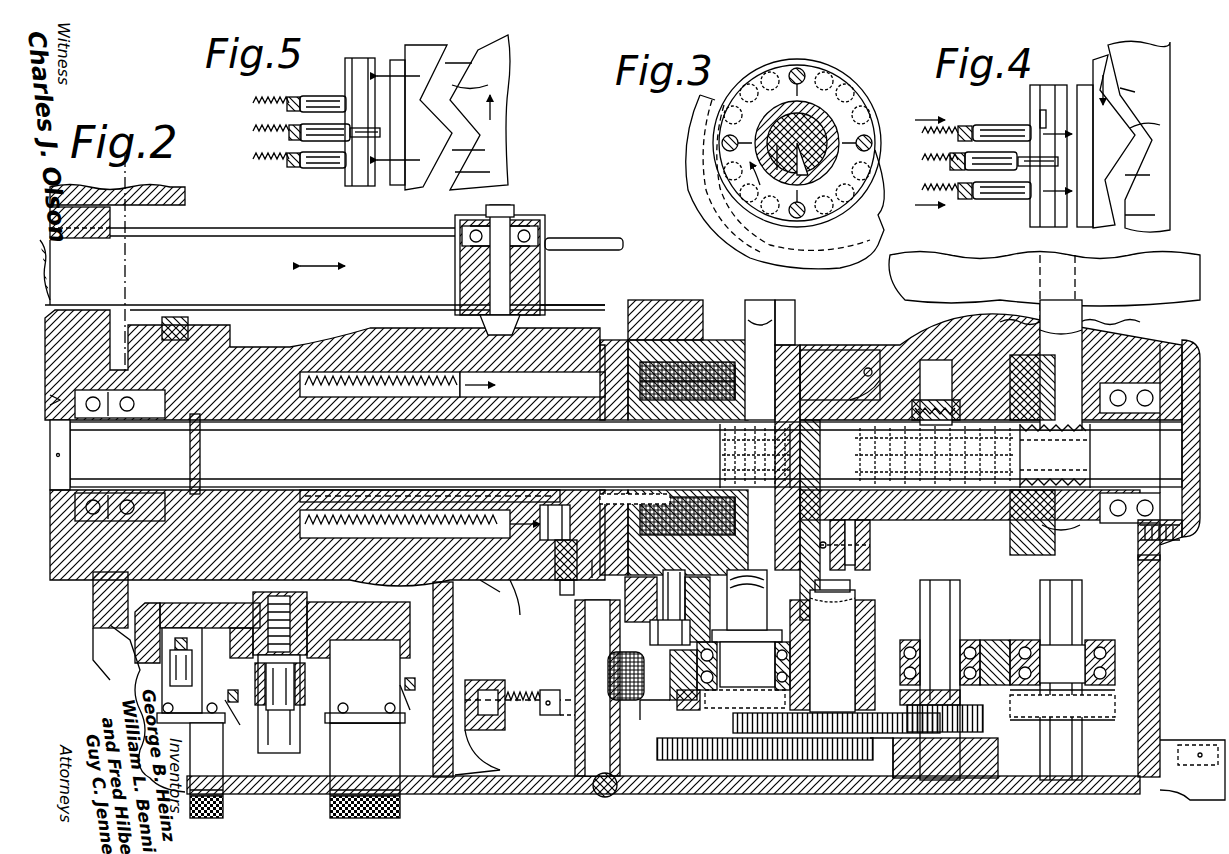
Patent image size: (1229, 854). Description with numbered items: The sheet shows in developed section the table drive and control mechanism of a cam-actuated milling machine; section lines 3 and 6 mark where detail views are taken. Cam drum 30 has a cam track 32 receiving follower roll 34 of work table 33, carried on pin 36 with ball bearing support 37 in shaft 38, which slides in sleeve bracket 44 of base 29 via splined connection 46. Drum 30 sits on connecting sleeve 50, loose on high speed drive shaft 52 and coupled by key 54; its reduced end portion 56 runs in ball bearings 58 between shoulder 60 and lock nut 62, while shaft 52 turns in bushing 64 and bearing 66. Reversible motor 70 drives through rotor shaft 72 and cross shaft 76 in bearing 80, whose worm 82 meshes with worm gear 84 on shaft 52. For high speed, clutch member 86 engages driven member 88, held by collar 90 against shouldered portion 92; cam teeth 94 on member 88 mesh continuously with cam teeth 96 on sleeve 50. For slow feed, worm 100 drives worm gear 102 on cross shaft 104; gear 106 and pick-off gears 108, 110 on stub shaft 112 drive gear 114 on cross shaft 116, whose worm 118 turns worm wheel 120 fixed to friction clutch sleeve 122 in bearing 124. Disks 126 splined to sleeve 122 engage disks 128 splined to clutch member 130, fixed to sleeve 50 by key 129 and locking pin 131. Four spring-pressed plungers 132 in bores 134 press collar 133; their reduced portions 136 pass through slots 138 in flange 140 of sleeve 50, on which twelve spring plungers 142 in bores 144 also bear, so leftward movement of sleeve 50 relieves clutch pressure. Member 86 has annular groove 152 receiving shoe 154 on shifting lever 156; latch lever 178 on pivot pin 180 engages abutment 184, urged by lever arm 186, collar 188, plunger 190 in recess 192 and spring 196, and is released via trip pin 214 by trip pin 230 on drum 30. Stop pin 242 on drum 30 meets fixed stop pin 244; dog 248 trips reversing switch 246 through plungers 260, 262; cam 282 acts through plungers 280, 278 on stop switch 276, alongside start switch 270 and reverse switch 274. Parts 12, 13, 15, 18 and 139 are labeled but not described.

In FIG. 2, the section line 3 is at (600, 348).
In FIG. 2, the section line 6 is at (122, 163).
In FIG. 2, the screw 12 is at (180, 718).
In FIG. 2, the screw 13 is at (398, 712).
In FIG. 2, the screw 15 is at (338, 712).
In FIG. 2, the lever 18 is at (228, 718).
In FIG. 2, the base 29 is at (412, 640).
In FIG. 3, the cam drum 30 is at (680, 123).
In FIG. 2, the cam drum 30 is at (352, 322).
In FIG. 3, the cam track 32 is at (700, 92).
In FIG. 2, the cam track 32 is at (232, 342).
In FIG. 2, the work table 33 is at (148, 188).
In FIG. 2, the follower roll 34 is at (490, 275).
In FIG. 2, the vertically extending pin 36 is at (542, 250).
In FIG. 2, the ball bearing support 37 is at (460, 230).
In FIG. 2, the longitudinally extending shaft 38 is at (325, 245).
In FIG. 2, the sleeve bracket 44 is at (78, 218).
In FIG. 2, the splined connection 46 is at (155, 236).
In FIG. 5, the connecting sleeve member 50 is at (400, 62).
In FIG. 4, the connecting sleeve member 50 is at (1084, 85).
In FIG. 3, the connecting sleeve member 50 is at (800, 100).
In FIG. 2, the connecting sleeve member 50 is at (474, 425).
In FIG. 3, the high speed drive shaft 52 is at (810, 170).
In FIG. 2, the high speed drive shaft 52 is at (272, 466).
In FIG. 2, the key 54 is at (415, 495).
In FIG. 2, the reduced end portion 56 is at (70, 440).
In FIG. 2, the ball bearings 58 is at (128, 410).
In FIG. 2, the shoulder 60 is at (150, 495).
In FIG. 2, the lock nut 62 is at (66, 400).
In FIG. 2, the bushing 64 is at (198, 448).
In FIG. 2, the bearing 66 is at (1118, 495).
In FIG. 2, the reversible table motor 70 is at (1022, 280).
In FIG. 2, the rotor shaft 72 is at (1100, 326).
In FIG. 2, the cross shaft 76 is at (1042, 360).
In FIG. 2, the bearing 80 is at (1030, 660).
In FIG. 2, the worm 82 is at (1020, 482).
In FIG. 2, the worm gear 84 is at (1060, 528).
In FIG. 2, the high speed clutch member 86 is at (805, 350).
In FIG. 5, the driven high speed clutch member 88 is at (505, 40).
In FIG. 4, the driven high speed clutch member 88 is at (1160, 48).
In FIG. 2, the driven high speed clutch member 88 is at (785, 345).
In FIG. 2, the collar 90 is at (812, 376).
In FIG. 2, the shouldered portion 92 is at (785, 440).
In FIG. 5, the cam teeth 94 is at (452, 85).
In FIG. 4, the cam teeth 94 is at (1130, 128).
In FIG. 2, the cam teeth 94 is at (730, 470).
In FIG. 5, the cam teeth 96 is at (445, 63).
In FIG. 4, the cam teeth 96 is at (1120, 88).
In FIG. 2, the cam teeth 96 is at (730, 430).
In FIG. 2, the worm 100 is at (955, 500).
In FIG. 2, the worm gear 102 is at (1028, 425).
In FIG. 2, the cross shaft 104 is at (932, 360).
In FIG. 2, the gear 106 is at (985, 725).
In FIG. 2, the pick-off gear 108 is at (832, 712).
In FIG. 2, the pick-off gear 110 is at (895, 770).
In FIG. 2, the stub shaft 112 is at (860, 605).
In FIG. 2, the gear 114 is at (700, 765).
In FIG. 2, the cross shaft 116 is at (758, 300).
In FIG. 2, the worm 118 is at (785, 462).
In FIG. 2, the slow speed worm wheel 120 is at (790, 320).
In FIG. 2, the friction clutch sleeve member 122 is at (648, 300).
In FIG. 2, the bearing 124 is at (740, 650).
In FIG. 2, the friction clutch disks 126 is at (655, 498).
In FIG. 2, the cooperating disks 128 is at (612, 405).
In FIG. 2, the key 129 is at (635, 496).
In FIG. 2, the friction clutch member 130 is at (662, 405).
In FIG. 2, the locking pin 131 is at (560, 386).
In FIG. 5, the spring-pressed plungers 132 is at (290, 165).
In FIG. 4, the spring-pressed plungers 132 is at (965, 195).
In FIG. 2, the spring-pressed plungers 132 is at (512, 580).
In FIG. 5, the collar 133 is at (385, 130).
In FIG. 4, the collar 133 is at (1062, 160).
In FIG. 2, the collar 133 is at (610, 340).
In FIG. 2, the axially extending bores 134 is at (480, 585).
In FIG. 5, the reduced portion 136 is at (345, 98).
In FIG. 4, the reduced portion 136 is at (1028, 124).
In FIG. 3, the reduced portion 136 is at (720, 140).
In FIG. 2, the reduced portion 136 is at (580, 545).
In FIG. 3, the slot 138 is at (728, 150).
In FIG. 2, the slot 138 is at (605, 500).
In FIG. 4, the pin 139 is at (1040, 110).
In FIG. 5, the flange 140 is at (358, 70).
In FIG. 4, the flange 140 is at (1048, 228).
In FIG. 3, the flange 140 is at (770, 200).
In FIG. 2, the flange 140 is at (550, 500).
In FIG. 5, the spring plungers 142 is at (303, 100).
In FIG. 4, the spring plungers 142 is at (966, 126).
In FIG. 3, the spring plungers 142 is at (740, 195).
In FIG. 2, the spring plungers 142 is at (540, 410).
In FIG. 2, the axially extending bores 144 is at (410, 405).
In FIG. 2, the annular groove 152 is at (860, 392).
In FIG. 2, the shoe 154 is at (860, 520).
In FIG. 2, the clutch shifting lever 156 is at (868, 550).
In FIG. 2, the latch lever arm 178 is at (625, 600).
In FIG. 2, the pivot pin 180 is at (600, 760).
In FIG. 2, the abutment 184 is at (645, 705).
In FIG. 2, the lever arm 186 is at (565, 740).
In FIG. 2, the collar 188 is at (535, 720).
In FIG. 2, the spring-pressed plunger 190 is at (495, 690).
In FIG. 2, the recess 192 is at (505, 720).
In FIG. 2, the tension spring 196 is at (470, 740).
In FIG. 2, the adjustable trip pin 214 is at (608, 665).
In FIG. 2, the trip pin 230 is at (560, 595).
In FIG. 2, the stop pin 242 is at (100, 618).
In FIG. 2, the stop pin 244 is at (100, 585).
In FIG. 2, the motor reversing switch 246 is at (135, 648).
In FIG. 2, the dog 248 is at (195, 300).
In FIG. 2, the spring pressed plunger 260 is at (188, 642).
In FIG. 2, the switch actuating plunger 262 is at (192, 668).
In FIG. 2, the manual start switch 270 is at (360, 748).
In FIG. 2, the manual reverse switch 274 is at (225, 800).
In FIG. 2, the cam actuated stop switch 276 is at (272, 735).
In FIG. 2, the switch plunger 278 is at (300, 690).
In FIG. 2, the spring pressed plunger 280 is at (300, 655).
In FIG. 2, the cam 282 is at (315, 625).